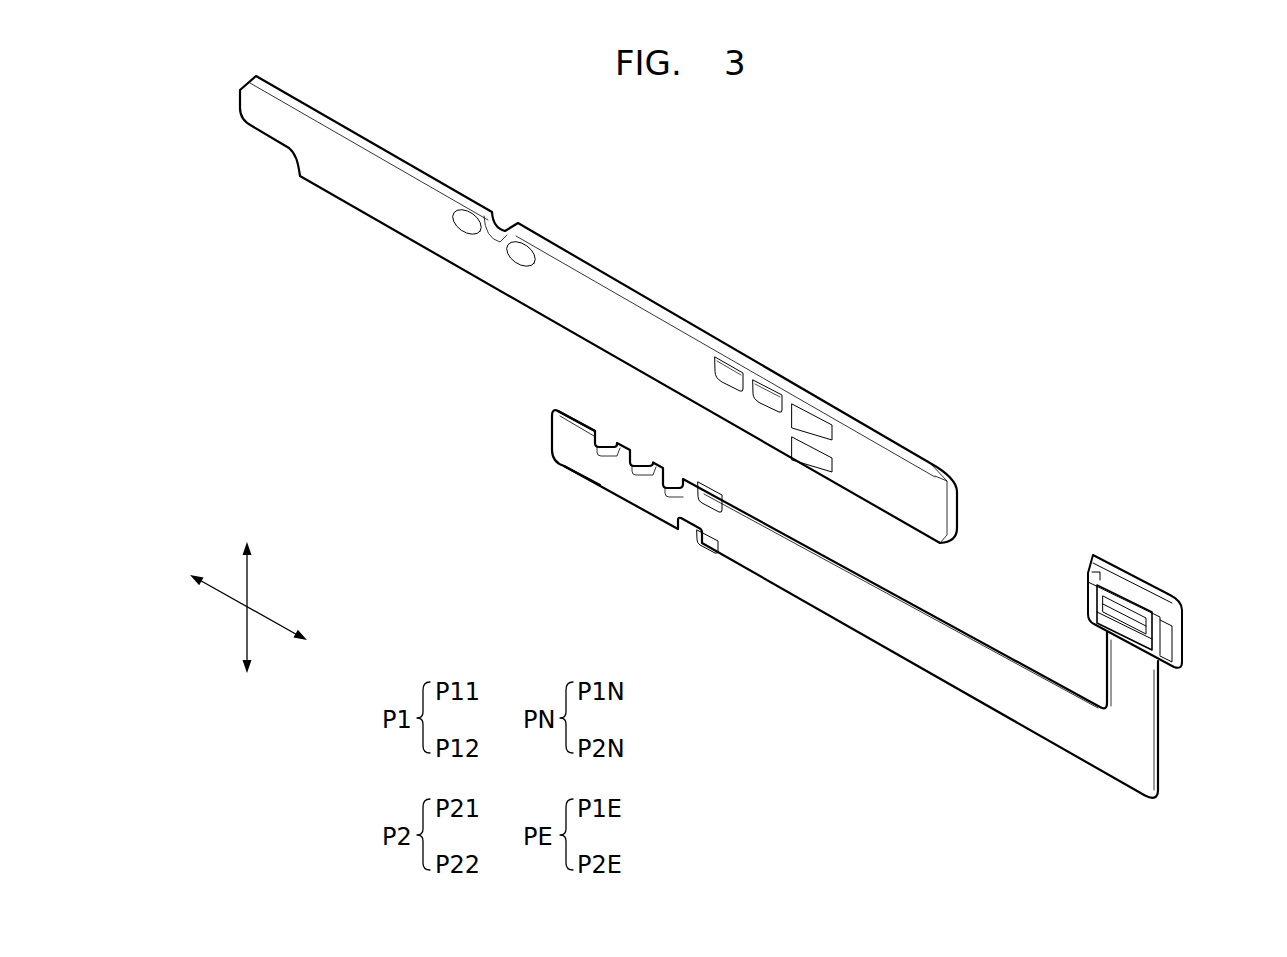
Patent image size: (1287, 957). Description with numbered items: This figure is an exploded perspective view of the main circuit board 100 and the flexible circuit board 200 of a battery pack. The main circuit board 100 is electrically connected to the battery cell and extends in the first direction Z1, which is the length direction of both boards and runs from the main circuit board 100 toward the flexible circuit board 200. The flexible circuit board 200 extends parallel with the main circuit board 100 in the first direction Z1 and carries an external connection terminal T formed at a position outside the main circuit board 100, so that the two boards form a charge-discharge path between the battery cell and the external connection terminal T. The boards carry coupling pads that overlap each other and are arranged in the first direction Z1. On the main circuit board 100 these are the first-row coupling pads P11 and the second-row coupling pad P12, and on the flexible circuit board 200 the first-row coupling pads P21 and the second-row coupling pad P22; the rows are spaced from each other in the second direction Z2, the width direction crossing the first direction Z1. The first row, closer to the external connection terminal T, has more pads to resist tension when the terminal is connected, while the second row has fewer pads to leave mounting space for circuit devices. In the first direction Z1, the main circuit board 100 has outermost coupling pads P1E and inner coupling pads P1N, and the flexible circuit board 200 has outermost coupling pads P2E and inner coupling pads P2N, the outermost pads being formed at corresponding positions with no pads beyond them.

The main circuit board 100 is at (245, 103).
The flexible circuit board 200 is at (1148, 760).
The external connection terminal T is at (1127, 597).
The inner coupling pads P1N is at (770, 387).
The outermost coupling pads P1E is at (822, 395).
The first-row coupling pads P11 is at (850, 439).
The second-row coupling pad P12 is at (848, 484).
The first-row coupling pads P21 is at (566, 422).
The second-row coupling pad P22 is at (565, 455).
The inner coupling pads P2N is at (648, 478).
The outermost coupling pads P2E is at (679, 549).
The first direction Z1 is at (264, 616).
The second direction Z2 is at (246, 594).